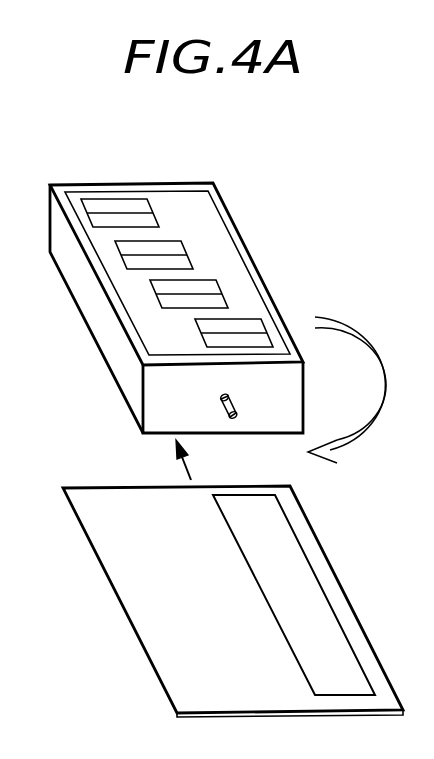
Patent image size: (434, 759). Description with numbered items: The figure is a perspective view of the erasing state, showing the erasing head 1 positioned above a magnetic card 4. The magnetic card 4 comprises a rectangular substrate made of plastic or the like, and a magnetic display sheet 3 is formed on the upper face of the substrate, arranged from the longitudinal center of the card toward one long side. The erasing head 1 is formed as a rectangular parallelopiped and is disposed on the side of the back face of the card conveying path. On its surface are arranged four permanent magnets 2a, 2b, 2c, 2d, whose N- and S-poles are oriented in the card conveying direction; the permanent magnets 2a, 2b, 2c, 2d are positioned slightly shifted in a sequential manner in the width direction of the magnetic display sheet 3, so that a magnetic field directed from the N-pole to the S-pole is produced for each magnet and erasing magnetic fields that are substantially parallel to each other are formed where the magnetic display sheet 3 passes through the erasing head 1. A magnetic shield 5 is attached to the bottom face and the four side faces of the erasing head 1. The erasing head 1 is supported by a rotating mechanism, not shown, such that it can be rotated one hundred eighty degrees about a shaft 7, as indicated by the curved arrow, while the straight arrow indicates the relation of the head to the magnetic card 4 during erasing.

The erasing head 1 is at (210, 229).
The permanent magnet 2a is at (131, 213).
The permanent magnet 2b is at (166, 255).
The permanent magnet 2c is at (199, 294).
The permanent magnet 2d is at (216, 333).
The magnetic display sheet 3 is at (292, 597).
The magnetic card 4 is at (177, 600).
The magnetic shield 5 is at (100, 310).
The shaft 7 is at (229, 396).